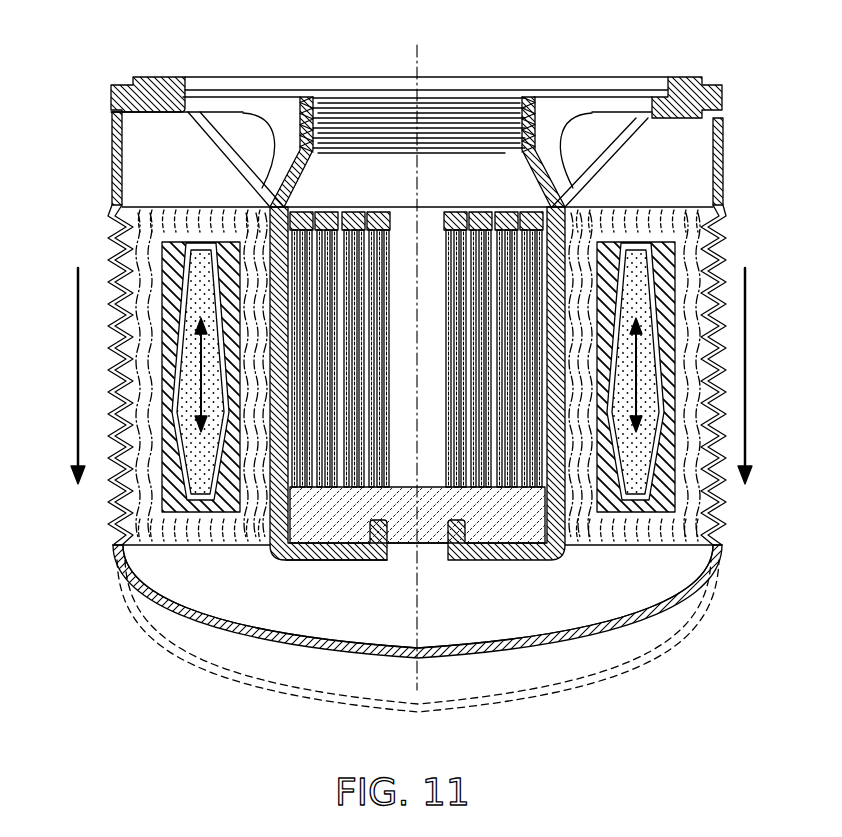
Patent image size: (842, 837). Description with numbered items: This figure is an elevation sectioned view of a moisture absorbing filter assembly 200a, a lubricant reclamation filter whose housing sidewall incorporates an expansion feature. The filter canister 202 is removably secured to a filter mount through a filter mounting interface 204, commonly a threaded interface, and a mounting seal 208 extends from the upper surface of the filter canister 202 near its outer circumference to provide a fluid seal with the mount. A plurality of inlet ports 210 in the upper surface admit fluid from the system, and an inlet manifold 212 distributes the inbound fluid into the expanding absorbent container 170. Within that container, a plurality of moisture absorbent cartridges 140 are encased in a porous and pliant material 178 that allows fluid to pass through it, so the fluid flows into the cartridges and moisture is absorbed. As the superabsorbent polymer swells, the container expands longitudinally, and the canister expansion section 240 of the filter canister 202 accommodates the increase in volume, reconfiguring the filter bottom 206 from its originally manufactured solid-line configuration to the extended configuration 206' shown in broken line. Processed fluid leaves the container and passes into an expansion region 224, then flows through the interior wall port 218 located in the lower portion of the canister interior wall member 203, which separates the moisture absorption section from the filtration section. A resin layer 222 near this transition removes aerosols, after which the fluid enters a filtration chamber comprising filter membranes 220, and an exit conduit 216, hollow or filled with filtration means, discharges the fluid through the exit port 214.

The moisture absorbing filter assembly 200a is at (94, 62).
The filter canister 202 is at (724, 180).
The canister interior wall member 203 is at (276, 560).
The filter mounting interface 204 is at (322, 120).
The filter bottom 206 is at (417, 636).
The extended configuration 206' is at (418, 669).
The mounting seal 208 is at (152, 76).
The inlet ports 210 is at (276, 135).
The inlet manifold 212 is at (140, 150).
The exit port 214 is at (447, 110).
The exit conduit 216 is at (438, 248).
The interior wall port 218 is at (403, 556).
The filter membranes 220 is at (313, 220).
The resin layer 222 is at (497, 510).
The expansion region 224 is at (636, 600).
The canister expansion section 240 is at (112, 513).
The expanding absorbent container 170 is at (700, 301).
The porous and pliant material 178 is at (714, 375).
The moisture absorbent cartridge 140 is at (662, 455).